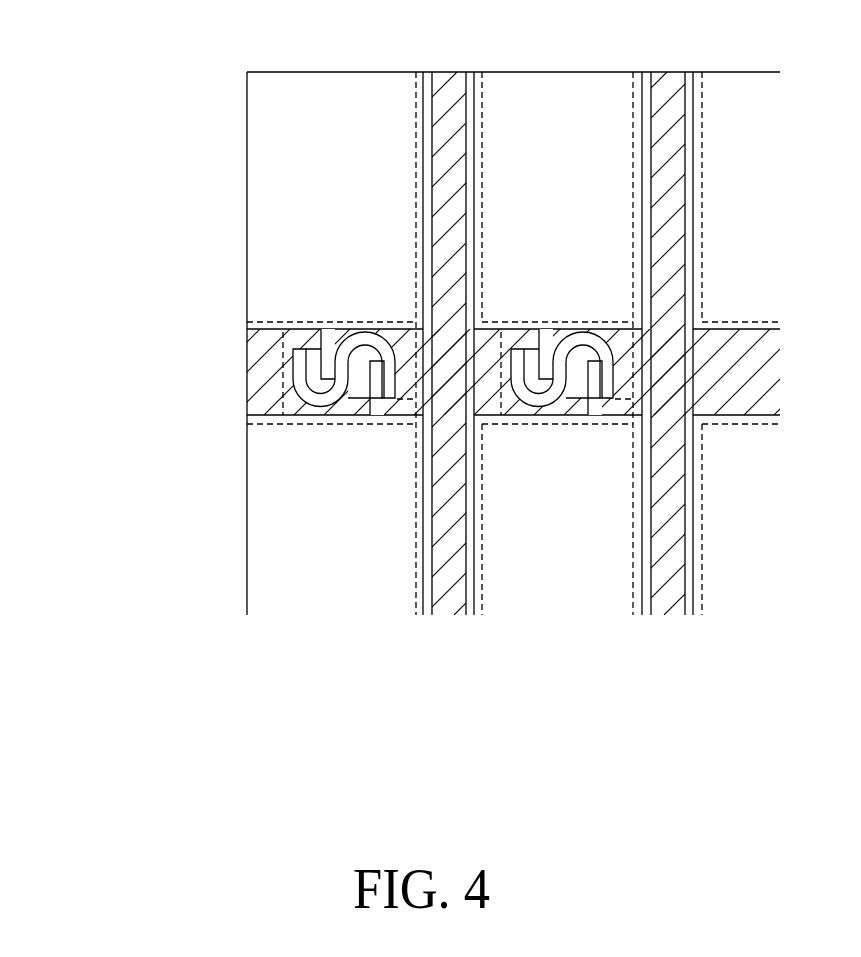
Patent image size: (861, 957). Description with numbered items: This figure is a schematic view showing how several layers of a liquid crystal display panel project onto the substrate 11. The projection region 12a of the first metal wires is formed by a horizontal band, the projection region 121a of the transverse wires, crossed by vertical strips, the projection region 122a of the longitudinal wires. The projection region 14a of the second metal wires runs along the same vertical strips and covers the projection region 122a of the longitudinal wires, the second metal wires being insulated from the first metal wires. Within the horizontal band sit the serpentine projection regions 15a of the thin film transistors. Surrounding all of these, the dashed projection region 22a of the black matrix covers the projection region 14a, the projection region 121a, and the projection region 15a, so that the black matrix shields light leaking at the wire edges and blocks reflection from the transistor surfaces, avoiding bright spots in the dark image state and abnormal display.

The substrate 11 is at (726, 68).
The projection region of the first metal wires 12a is at (430, 343).
The projection region of the transverse wires 121a is at (253, 390).
The projection region of the longitudinal wires 122a is at (442, 510).
The projection region of the second metal wires 14a is at (466, 82).
The projection region of the thin film transistors 15a is at (295, 328).
The projection region of the black matrix 22a is at (415, 120).